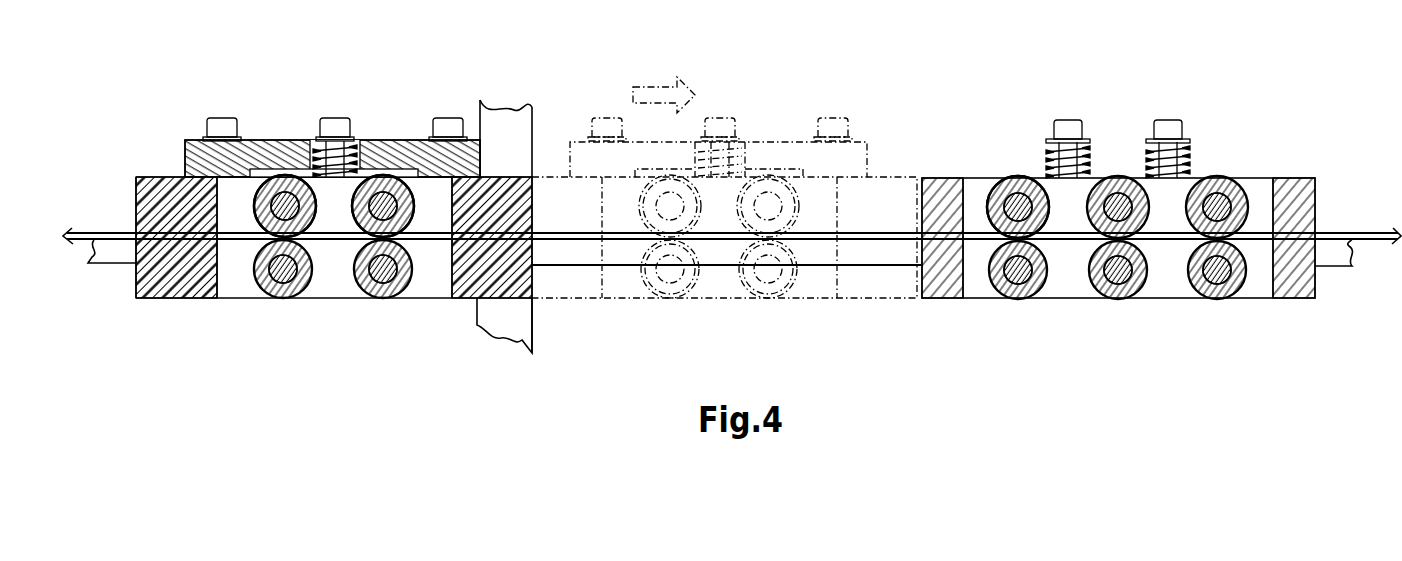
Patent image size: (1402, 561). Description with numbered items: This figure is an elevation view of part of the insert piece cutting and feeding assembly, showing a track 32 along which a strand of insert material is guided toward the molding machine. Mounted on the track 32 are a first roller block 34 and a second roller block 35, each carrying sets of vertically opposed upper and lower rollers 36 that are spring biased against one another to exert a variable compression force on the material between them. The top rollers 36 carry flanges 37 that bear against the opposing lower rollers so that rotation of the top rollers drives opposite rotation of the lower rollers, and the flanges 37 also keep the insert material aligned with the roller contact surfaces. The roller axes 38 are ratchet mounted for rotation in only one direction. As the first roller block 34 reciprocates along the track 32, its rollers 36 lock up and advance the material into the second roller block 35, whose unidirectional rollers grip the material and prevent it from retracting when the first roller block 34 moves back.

The track 32 is at (120, 250).
The first roller block 34 is at (303, 104).
The second roller block 35 is at (1124, 106).
The rollers 36 is at (385, 175).
The flanges 37 is at (262, 187).
The roller axes 38 is at (283, 283).